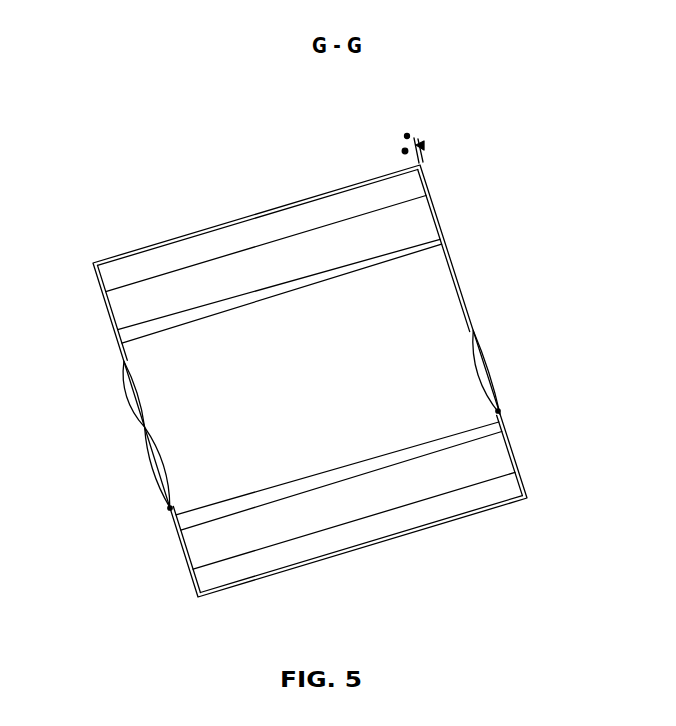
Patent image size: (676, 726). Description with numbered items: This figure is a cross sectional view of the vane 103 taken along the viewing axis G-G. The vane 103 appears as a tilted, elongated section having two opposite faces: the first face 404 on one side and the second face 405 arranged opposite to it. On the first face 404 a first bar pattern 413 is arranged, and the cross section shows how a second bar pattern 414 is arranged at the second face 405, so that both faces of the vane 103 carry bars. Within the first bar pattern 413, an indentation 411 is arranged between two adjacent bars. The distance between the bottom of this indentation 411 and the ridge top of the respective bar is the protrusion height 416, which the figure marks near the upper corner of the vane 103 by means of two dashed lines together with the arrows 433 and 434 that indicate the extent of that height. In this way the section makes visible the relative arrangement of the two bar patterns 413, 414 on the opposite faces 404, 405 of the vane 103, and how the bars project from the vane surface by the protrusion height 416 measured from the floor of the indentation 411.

The vane 103 is at (143, 154).
The protrusion height 416 is at (406, 134).
The arrow 434 is at (404, 151).
The arrow 433 is at (418, 145).
The indentation 411 is at (462, 293).
The first face 404 is at (475, 330).
The first bar pattern 413 is at (499, 411).
The second face 405 is at (142, 429).
The second bar pattern 414 is at (170, 509).